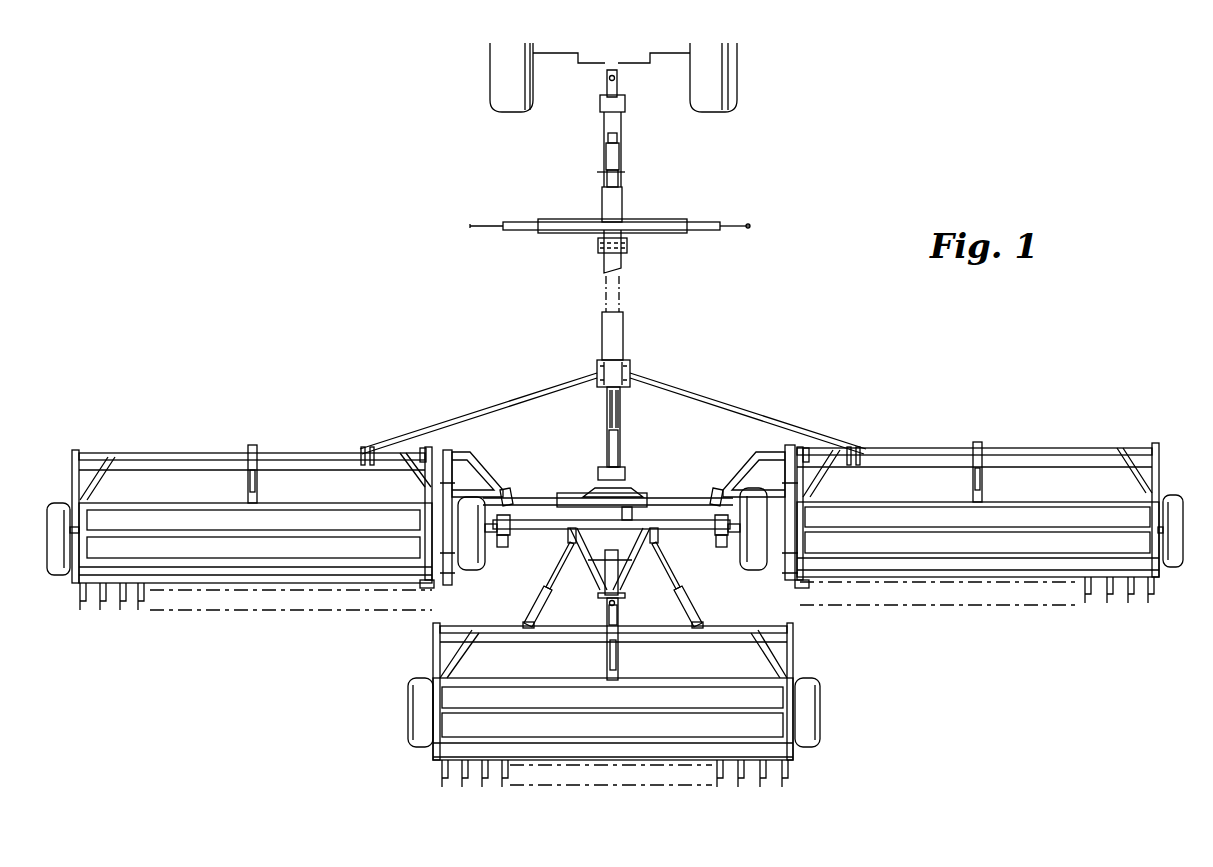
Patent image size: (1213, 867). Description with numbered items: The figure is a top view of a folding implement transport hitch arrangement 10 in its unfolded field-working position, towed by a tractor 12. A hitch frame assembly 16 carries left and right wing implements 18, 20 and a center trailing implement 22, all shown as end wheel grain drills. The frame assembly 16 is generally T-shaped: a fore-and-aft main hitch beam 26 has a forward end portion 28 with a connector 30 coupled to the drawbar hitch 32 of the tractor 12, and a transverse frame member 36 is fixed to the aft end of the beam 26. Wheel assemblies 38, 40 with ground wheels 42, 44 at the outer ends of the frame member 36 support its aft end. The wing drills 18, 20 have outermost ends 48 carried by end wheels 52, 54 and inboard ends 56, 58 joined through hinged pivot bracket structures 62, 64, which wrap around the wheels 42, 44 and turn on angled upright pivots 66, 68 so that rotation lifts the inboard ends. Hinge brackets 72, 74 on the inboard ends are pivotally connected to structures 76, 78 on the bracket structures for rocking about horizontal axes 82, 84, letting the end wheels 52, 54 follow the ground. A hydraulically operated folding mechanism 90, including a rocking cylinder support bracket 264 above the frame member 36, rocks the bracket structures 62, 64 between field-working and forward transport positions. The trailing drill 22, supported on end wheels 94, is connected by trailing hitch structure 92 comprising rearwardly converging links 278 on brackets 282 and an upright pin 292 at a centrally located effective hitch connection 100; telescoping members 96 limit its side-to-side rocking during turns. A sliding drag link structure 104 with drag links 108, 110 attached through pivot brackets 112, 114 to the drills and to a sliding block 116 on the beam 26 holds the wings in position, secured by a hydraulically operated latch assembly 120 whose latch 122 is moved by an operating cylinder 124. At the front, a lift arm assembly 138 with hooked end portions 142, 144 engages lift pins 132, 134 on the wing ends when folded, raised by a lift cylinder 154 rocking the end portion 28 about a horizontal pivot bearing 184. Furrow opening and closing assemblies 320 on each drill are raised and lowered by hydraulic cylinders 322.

The folding implement transport hitch arrangement 10 is at (960, 652).
The tractor 12 is at (467, 63).
The hitch frame assembly 16 is at (553, 302).
The left wing implement 18 is at (190, 446).
The right wing implement 20 is at (1075, 446).
The center trailing implement 22 is at (843, 703).
The main hitch beam 26 is at (622, 205).
The forward end portion 28 is at (604, 118).
The connector 30 is at (624, 96).
The drawbar hitch 32 is at (606, 75).
The transverse frame member 36 is at (695, 516).
The left wheel assembly 38 is at (498, 548).
The right wheel assembly 40 is at (726, 545).
The left ground wheel 42 is at (465, 512).
The right ground wheel 44 is at (762, 515).
The outermost end of left wing drill 48 is at (73, 456).
The left end wheel 52 is at (50, 505).
The right end wheel 54 is at (1175, 495).
The inboard end of left wing drill 56 is at (427, 448).
The inboard end of right wing drill 58 is at (795, 450).
The left hinged pivot bracket structure 62 is at (470, 462).
The right hinged pivot bracket structure 64 is at (767, 462).
The left upright pivot 66 is at (507, 489).
The right upright pivot 68 is at (718, 488).
The left hinge bracket 72 is at (428, 590).
The right hinge bracket 74 is at (797, 590).
The left hinge structure 76 is at (450, 586).
The right hinge structure 78 is at (785, 580).
The left horizontal hinge axis 82 is at (430, 447).
The right horizontal hinge axis 84 is at (800, 447).
The hydraulically operated folding mechanism 90 is at (590, 468).
The trailing hitch structure 92 is at (546, 581).
The end wheels of trailing drill 94 is at (410, 746).
The telescoping members 96 is at (527, 627).
The effective hitch connection 100 is at (622, 600).
The sliding drag link structure 104 is at (648, 387).
The left drag link 108 is at (531, 396).
The right drag link 110 is at (722, 400).
The pivot bracket 112 is at (362, 448).
The right brace clamp 114 is at (862, 448).
The sliding block 116 is at (622, 358).
The hydraulically operated latch assembly 120 is at (640, 396).
The latch 122 is at (597, 375).
The hydraulic operating cylinder 124 is at (620, 430).
The left lift pin 132 is at (55, 577).
The right lift pin 134 is at (1170, 568).
The lift arm assembly 138 is at (553, 214).
The left hooked end portion 142 is at (482, 225).
The right hooked end portion 144 is at (746, 225).
The lift cylinder 154 is at (620, 150).
The horizontal pivot bearing 184 is at (627, 250).
The rocking cylinder support bracket 264 is at (576, 494).
The rearwardly converging links 278 is at (583, 601).
The brackets 282 is at (632, 512).
The upright pin 292 is at (607, 620).
The furrow opening and closing assemblies 320 is at (160, 610).
The hydraulic cylinders 322 is at (258, 460).